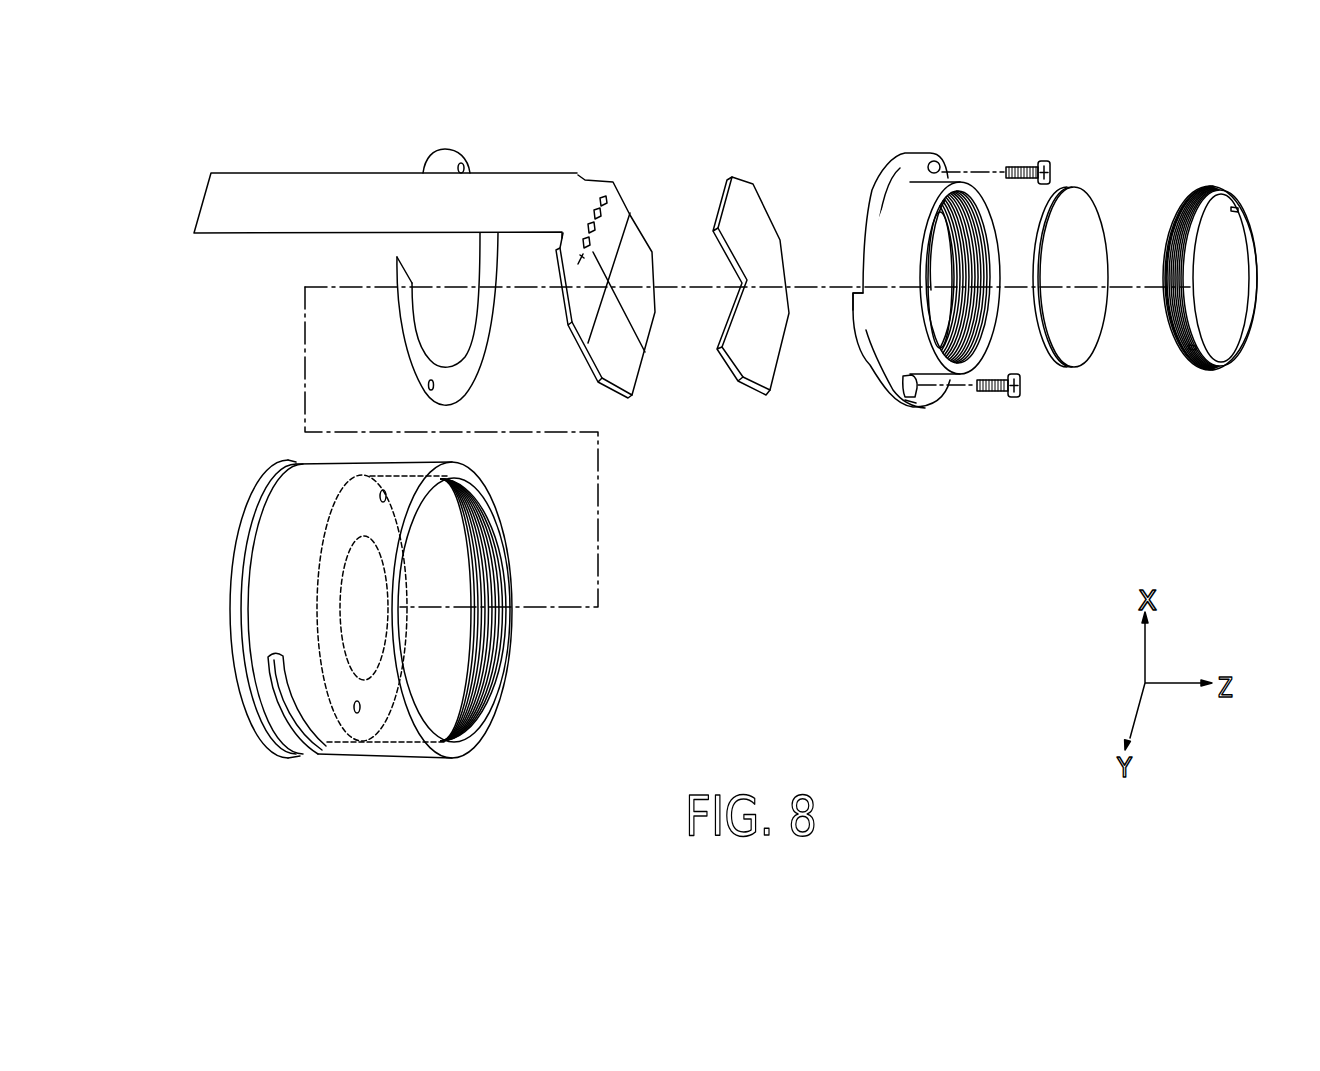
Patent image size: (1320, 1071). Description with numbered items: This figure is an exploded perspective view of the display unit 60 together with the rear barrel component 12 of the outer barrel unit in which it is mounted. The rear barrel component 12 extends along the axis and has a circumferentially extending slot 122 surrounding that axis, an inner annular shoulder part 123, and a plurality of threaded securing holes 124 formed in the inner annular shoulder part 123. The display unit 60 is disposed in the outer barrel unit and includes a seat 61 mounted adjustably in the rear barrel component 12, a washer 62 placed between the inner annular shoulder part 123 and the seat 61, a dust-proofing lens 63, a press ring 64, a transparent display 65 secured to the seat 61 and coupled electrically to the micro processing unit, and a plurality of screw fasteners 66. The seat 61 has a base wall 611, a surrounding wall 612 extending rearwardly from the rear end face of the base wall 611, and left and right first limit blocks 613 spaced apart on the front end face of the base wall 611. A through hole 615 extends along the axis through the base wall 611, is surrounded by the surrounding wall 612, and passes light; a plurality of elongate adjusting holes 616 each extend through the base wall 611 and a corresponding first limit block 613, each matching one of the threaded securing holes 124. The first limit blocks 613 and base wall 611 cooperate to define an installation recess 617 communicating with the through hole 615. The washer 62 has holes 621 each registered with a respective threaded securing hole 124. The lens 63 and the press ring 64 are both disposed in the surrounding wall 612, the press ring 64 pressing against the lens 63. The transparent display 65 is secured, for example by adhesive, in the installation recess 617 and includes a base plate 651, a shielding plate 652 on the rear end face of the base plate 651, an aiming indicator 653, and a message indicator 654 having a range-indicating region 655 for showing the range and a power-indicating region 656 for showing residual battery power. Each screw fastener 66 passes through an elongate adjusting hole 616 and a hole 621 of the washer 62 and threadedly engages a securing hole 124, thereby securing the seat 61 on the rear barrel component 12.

The rear barrel component 12 is at (350, 758).
The circumferentially extending slot 122 is at (283, 707).
The inner annular shoulder part 123 is at (395, 728).
The threaded securing holes 124 is at (380, 497).
The display unit 60 is at (1011, 289).
The seat 61 is at (893, 297).
The base wall 611 is at (899, 297).
The surrounding wall 612 is at (930, 372).
The first limit blocks 613 is at (905, 153).
The through hole 615 is at (933, 305).
The elongate adjusting holes 616 is at (934, 161).
The installation recess 617 is at (852, 266).
The washer 62 is at (385, 232).
The holes 621 is at (461, 163).
The dust-proofing lens 63 is at (1105, 190).
The press ring 64 is at (1213, 187).
The transparent display 65 is at (634, 271).
The base plate 651 is at (605, 286).
The shielding plate 652 is at (750, 386).
The aiming indicator 653 is at (633, 318).
The message indicator 654 is at (601, 158).
The range-indicating region 655 is at (592, 197).
The power-indicating region 656 is at (602, 193).
The screw fasteners 66 is at (1044, 162).